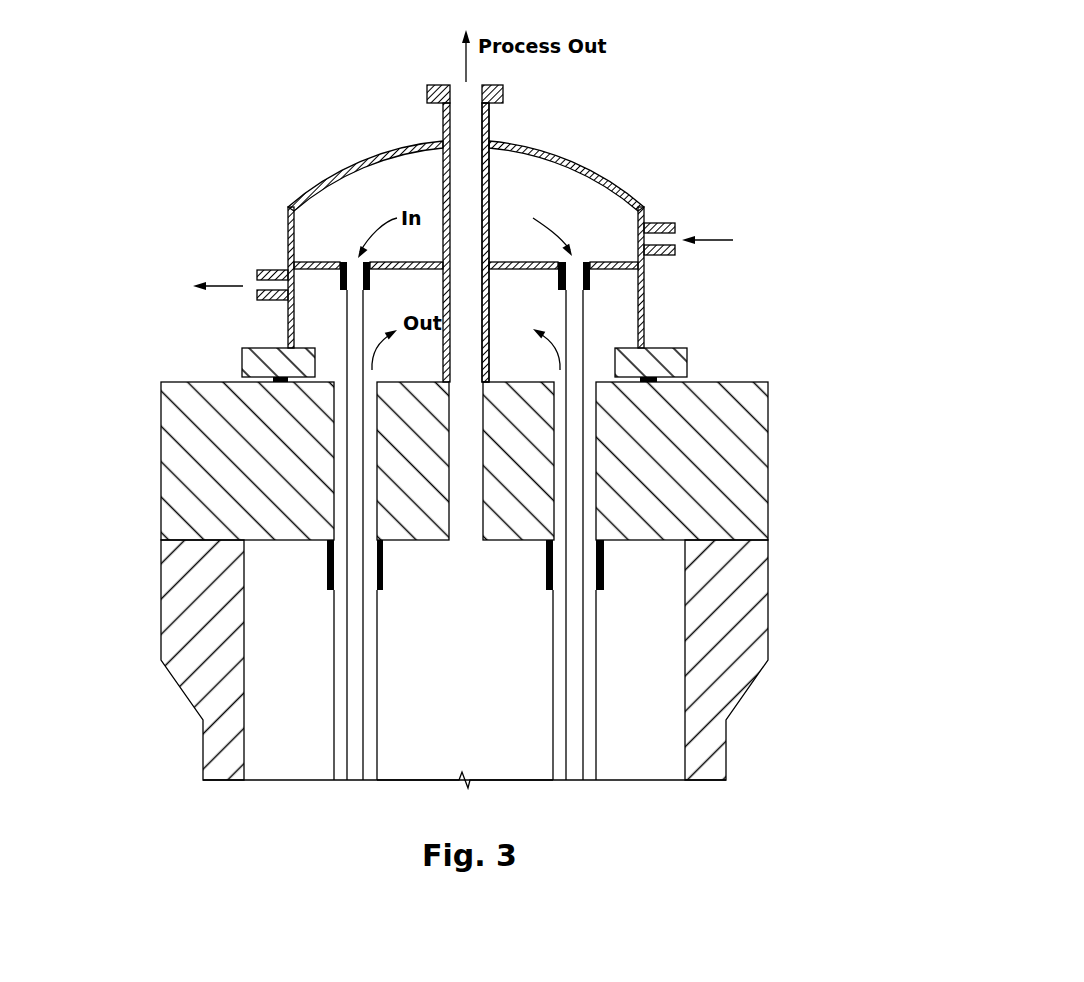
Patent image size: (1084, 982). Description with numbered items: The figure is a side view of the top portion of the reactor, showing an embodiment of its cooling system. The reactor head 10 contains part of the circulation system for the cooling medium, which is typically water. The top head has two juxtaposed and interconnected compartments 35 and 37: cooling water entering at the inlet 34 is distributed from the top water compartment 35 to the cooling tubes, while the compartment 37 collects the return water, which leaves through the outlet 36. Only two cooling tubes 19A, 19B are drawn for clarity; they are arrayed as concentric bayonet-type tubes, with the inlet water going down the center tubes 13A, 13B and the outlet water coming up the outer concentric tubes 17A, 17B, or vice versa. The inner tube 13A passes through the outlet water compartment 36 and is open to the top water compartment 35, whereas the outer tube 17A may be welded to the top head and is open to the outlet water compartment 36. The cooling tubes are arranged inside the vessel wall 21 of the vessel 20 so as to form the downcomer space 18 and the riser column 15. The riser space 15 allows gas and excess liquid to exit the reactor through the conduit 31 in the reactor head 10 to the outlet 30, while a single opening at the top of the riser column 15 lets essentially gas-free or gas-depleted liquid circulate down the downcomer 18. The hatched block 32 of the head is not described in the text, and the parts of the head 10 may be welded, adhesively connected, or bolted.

The reactor head 10 is at (782, 408).
The center tube 13A is at (355, 746).
The center tube 13B is at (573, 657).
The riser column 15 is at (513, 748).
The outer concentric tube 17A is at (372, 719).
The outer concentric tube 17B is at (558, 629).
The downcomer space 18 is at (277, 740).
The cooling tube 19A is at (381, 683).
The cooling tube 19B is at (549, 606).
The vessel 20 is at (786, 652).
The vessel wall 21 is at (740, 607).
The outlet 30 is at (463, 67).
The conduit 31 is at (470, 317).
The upper housing block 32 is at (770, 463).
The inlet 34 is at (710, 238).
The top water compartment 35 is at (574, 248).
The outlet 36 is at (227, 283).
The compartment 37 is at (320, 295).